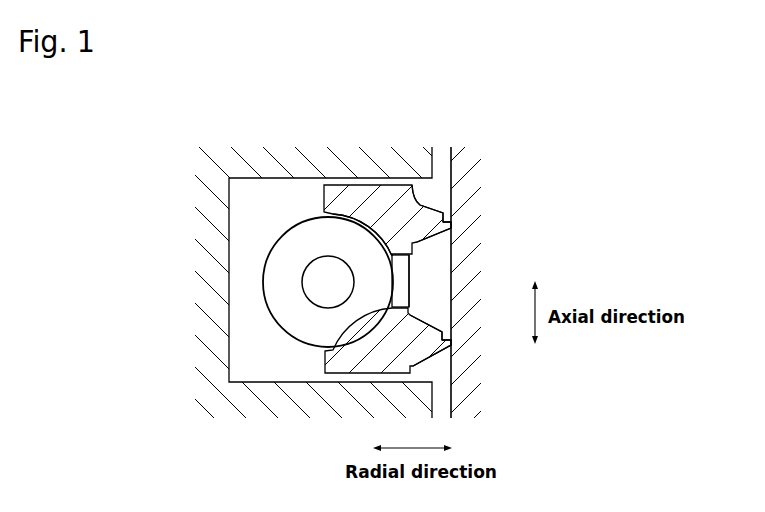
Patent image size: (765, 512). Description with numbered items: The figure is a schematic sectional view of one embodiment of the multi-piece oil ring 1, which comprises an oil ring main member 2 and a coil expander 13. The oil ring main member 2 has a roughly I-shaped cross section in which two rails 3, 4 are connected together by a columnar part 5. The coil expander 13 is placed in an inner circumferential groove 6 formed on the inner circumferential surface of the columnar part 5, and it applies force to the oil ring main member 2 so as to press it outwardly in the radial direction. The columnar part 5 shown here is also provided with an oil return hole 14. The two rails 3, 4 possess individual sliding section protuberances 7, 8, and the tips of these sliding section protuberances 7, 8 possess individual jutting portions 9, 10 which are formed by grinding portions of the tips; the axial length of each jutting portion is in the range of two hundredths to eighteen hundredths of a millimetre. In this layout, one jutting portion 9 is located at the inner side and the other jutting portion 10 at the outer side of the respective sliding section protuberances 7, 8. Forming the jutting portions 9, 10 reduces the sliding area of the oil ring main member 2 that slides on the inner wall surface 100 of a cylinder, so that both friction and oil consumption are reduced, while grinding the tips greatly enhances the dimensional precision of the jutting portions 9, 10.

The multi-piece oil ring 1 is at (265, 193).
The oil ring main member 2 is at (441, 194).
The rail 3 is at (349, 190).
The rail 4 is at (351, 357).
The columnar part 5 is at (412, 262).
The inner circumferential groove 6 is at (338, 216).
The sliding section protuberance 7 is at (413, 186).
The sliding section protuberance 8 is at (425, 348).
The jutting portion 9 is at (443, 222).
The jutting portion 10 is at (442, 340).
The coil expander 13 is at (266, 264).
The oil return hole 14 is at (400, 291).
The inner wall surface 100 is at (451, 162).